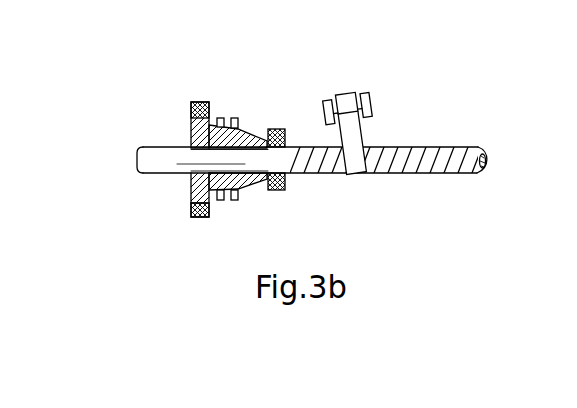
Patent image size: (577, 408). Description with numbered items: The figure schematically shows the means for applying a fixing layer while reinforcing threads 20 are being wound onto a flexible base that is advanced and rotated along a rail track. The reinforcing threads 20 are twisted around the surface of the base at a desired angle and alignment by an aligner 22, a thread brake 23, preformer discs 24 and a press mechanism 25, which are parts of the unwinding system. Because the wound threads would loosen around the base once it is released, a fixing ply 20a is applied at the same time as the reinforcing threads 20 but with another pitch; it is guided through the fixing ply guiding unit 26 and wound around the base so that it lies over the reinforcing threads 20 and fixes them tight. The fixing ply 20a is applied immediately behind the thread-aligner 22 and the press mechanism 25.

The reinforcing threads 20 is at (191, 112).
The fixing ply 20a is at (350, 136).
The aligner 22 is at (202, 101).
The thread brake 23 is at (188, 211).
The preformer discs 24 is at (244, 126).
The press mechanism 25 is at (283, 128).
The fixing ply guiding unit 26 is at (350, 103).